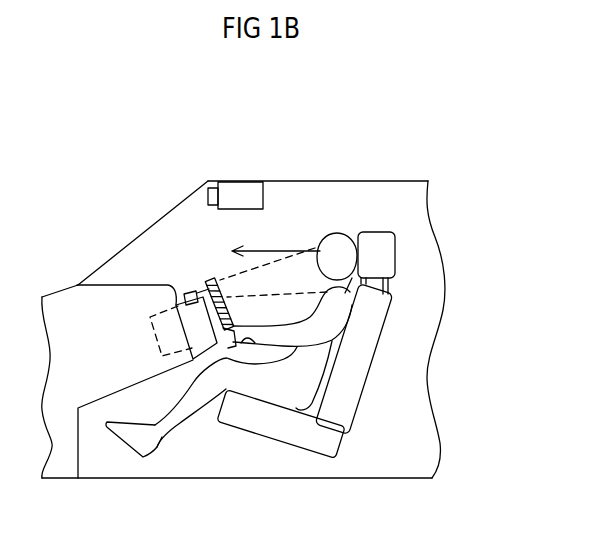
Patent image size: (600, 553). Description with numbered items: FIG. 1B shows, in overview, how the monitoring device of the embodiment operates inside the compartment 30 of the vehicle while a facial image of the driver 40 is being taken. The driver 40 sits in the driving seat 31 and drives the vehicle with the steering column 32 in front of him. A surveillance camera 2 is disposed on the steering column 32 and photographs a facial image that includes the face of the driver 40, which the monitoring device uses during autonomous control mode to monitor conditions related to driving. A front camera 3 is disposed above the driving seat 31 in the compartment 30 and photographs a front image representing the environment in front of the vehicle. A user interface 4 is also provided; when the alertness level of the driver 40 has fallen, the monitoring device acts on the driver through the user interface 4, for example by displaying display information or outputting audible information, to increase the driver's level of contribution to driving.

The surveillance camera 2 is at (190, 291).
The front camera 3 is at (241, 195).
The user interface 4 is at (150, 328).
The compartment 30 is at (310, 195).
The driving seat 31 is at (328, 440).
The steering column 32 is at (174, 300).
The driver 40 is at (347, 233).